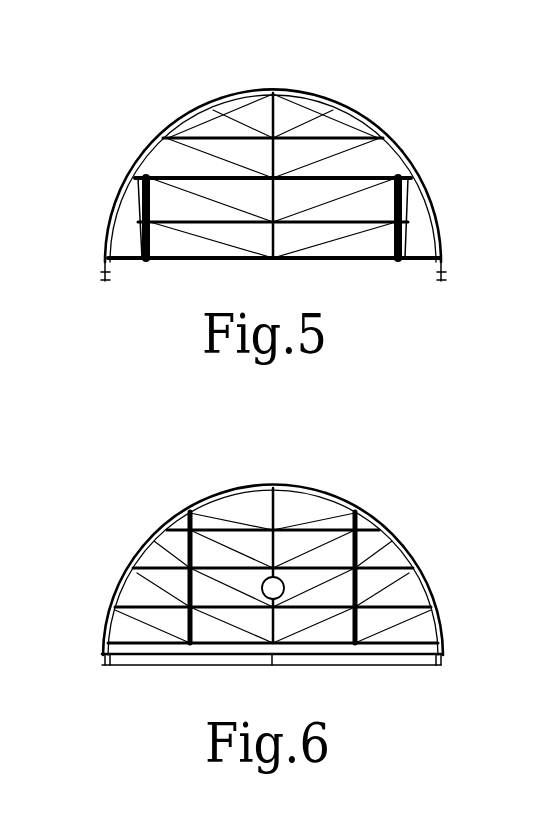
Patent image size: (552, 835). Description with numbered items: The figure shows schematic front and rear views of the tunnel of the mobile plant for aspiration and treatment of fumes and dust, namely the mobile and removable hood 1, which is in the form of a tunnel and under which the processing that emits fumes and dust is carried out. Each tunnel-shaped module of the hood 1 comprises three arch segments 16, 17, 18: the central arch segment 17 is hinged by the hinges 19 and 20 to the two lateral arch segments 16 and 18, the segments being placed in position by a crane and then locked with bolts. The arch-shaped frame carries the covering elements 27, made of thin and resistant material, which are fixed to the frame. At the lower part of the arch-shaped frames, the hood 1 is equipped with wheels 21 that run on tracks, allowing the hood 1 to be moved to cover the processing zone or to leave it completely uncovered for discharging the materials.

In FIG. 5, the hood 1 is at (340, 96).
In FIG. 6, the hood 1 is at (365, 510).
In FIG. 5, the lateral arch segment 16 is at (138, 164).
In FIG. 6, the lateral arch segment 16 is at (112, 595).
In FIG. 5, the central arch segment 17 is at (285, 90).
In FIG. 6, the central arch segment 17 is at (300, 484).
In FIG. 5, the lateral arch segment 18 is at (427, 187).
In FIG. 6, the lateral arch segment 18 is at (427, 577).
In FIG. 5, the hinge 19 is at (150, 135).
In FIG. 6, the hinge 19 is at (160, 533).
In FIG. 5, the hinge 20 is at (393, 137).
In FIG. 6, the hinge 20 is at (390, 537).
In FIG. 5, the wheels 21 is at (448, 277).
In FIG. 6, the wheels 21 is at (443, 665).
In FIG. 6, the covering elements 27 is at (215, 493).